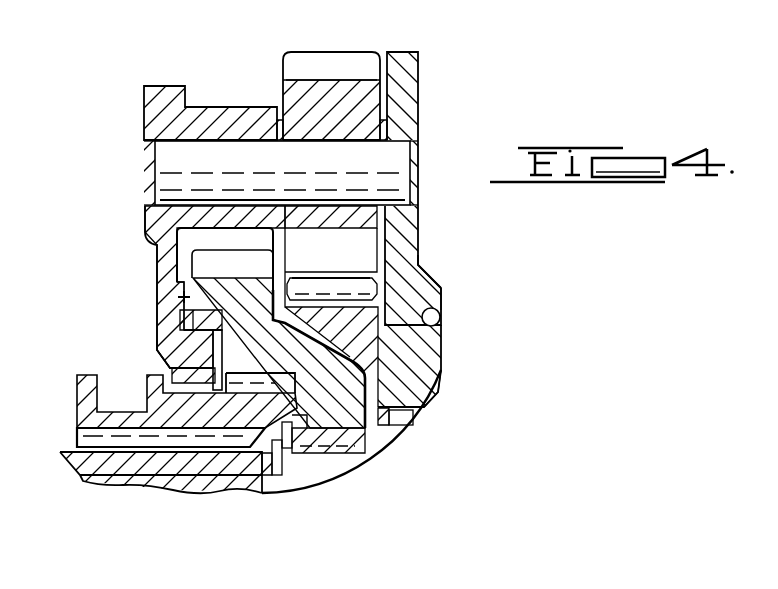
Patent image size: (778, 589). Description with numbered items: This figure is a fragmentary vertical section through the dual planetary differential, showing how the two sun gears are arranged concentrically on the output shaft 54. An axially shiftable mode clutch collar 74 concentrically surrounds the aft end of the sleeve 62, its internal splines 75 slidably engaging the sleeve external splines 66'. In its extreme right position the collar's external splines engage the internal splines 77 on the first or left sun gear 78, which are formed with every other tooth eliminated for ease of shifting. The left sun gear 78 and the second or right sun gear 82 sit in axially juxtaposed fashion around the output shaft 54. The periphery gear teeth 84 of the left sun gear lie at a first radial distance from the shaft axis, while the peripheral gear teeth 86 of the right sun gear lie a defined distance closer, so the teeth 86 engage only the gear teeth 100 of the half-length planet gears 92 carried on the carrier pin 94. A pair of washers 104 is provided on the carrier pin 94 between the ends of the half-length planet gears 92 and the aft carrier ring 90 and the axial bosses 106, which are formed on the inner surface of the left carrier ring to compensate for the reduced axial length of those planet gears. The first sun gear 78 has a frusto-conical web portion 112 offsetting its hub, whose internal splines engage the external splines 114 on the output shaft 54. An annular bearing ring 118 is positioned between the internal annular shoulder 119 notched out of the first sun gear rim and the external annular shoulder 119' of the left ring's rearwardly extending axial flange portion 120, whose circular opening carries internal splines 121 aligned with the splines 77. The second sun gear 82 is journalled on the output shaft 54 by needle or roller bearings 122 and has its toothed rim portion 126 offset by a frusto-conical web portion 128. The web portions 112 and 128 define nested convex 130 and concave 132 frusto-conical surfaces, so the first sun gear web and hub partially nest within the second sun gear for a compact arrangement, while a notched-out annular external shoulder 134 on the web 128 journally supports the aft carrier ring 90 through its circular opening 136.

The output shaft 54 is at (280, 483).
The sleeve 62 is at (78, 470).
The sleeve external splines 66' is at (389, 294).
The mode clutch collar 74 is at (90, 418).
The internal splines 75 is at (80, 440).
The internal splines 77 is at (247, 365).
The first sun gear 78 is at (183, 297).
The second sun gear 82 is at (456, 339).
The periphery gear teeth 84 is at (203, 263).
The peripheral gear teeth 86 is at (343, 288).
The aft carrier ring 90 is at (410, 57).
The half-length planet gears 92 is at (318, 50).
The carrier pin 94 is at (170, 173).
The gear teeth 100 is at (355, 57).
The washers 104 is at (400, 127).
The axial bosses 106 is at (210, 118).
The web portion 112 is at (337, 413).
The external splines 114 is at (308, 447).
The bearing ring 118 is at (200, 327).
The internal annular shoulder 119 is at (389, 294).
The external annular shoulder 119' is at (192, 427).
The axial flange portion 120 is at (157, 352).
The internal splines 121 is at (173, 382).
The needle or roller bearings 122 is at (412, 420).
The toothed rim portion 126 is at (417, 266).
The web portion 128 is at (365, 342).
The convex frusto-conical surface 130 is at (312, 330).
The concave frusto-conical surface 132 is at (433, 386).
The notched-out annular external shoulder 134 is at (441, 297).
The circular opening 136 is at (441, 322).